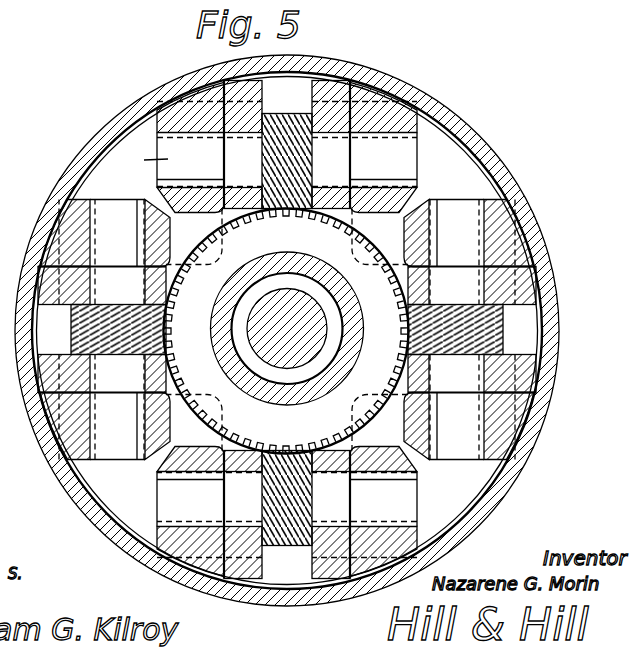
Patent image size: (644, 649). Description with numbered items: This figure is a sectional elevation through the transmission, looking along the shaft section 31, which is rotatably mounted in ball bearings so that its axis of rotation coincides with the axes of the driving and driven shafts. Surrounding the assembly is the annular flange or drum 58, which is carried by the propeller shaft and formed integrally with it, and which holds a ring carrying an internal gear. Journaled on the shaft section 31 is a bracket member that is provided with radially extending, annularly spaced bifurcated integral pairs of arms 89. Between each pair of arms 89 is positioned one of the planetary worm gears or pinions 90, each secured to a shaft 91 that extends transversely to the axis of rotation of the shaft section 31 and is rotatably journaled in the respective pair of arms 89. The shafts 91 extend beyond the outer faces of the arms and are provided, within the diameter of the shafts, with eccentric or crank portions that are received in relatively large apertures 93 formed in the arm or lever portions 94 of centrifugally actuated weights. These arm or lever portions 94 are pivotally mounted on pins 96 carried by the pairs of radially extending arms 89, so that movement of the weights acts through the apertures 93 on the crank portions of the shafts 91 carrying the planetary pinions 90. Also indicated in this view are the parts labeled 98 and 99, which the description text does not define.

The shaft section 31 is at (268, 330).
The annular flange or drum 58 is at (539, 238).
The bifurcated pairs of arms 89 is at (238, 84).
The planetary worm gears or pinions 90 is at (278, 122).
The shafts 91 is at (338, 167).
The apertures 93 is at (161, 191).
The arm or lever portions 94 is at (391, 113).
The pins 96 is at (187, 93).
The shading ring 98 is at (112, 204).
The toothed rotor ring 99 is at (380, 414).